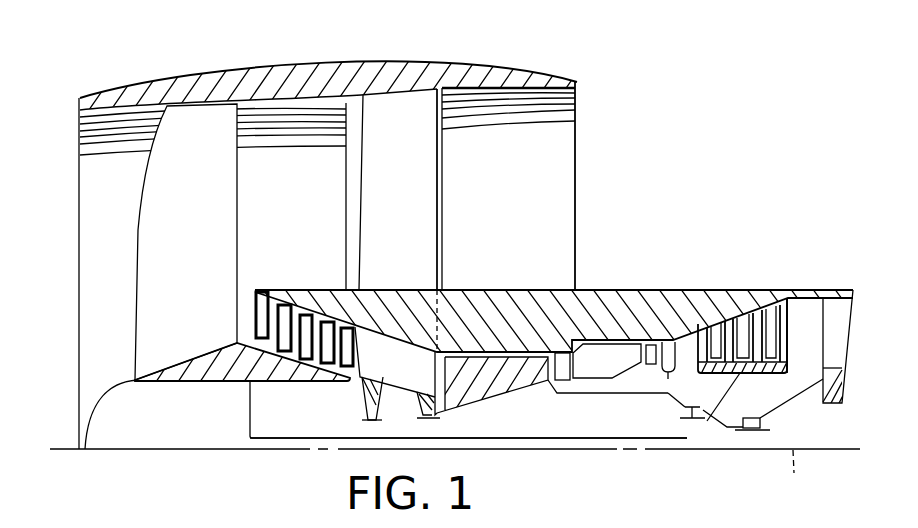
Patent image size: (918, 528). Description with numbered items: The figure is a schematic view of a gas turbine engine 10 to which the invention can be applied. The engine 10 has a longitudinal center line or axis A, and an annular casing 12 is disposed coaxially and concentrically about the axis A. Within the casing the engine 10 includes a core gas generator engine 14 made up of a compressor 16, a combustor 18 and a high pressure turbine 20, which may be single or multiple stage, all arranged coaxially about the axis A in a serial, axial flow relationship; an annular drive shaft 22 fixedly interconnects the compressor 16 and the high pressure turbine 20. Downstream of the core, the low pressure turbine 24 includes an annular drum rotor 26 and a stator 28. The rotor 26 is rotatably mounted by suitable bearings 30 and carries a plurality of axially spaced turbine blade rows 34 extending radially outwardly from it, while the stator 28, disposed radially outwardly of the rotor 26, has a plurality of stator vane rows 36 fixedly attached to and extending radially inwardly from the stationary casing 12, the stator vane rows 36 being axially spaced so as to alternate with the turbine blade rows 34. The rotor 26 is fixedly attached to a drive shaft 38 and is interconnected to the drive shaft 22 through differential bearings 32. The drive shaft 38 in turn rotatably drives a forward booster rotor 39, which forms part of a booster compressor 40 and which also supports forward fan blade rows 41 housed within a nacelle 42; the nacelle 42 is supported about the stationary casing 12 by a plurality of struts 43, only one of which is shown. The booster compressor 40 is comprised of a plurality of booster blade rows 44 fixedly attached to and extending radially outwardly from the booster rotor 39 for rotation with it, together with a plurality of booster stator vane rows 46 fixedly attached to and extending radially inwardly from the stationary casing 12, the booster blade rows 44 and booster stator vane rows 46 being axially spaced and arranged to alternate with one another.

The gas turbine engine 10 is at (673, 162).
The annular casing 12 is at (587, 290).
The core gas generator engine 14 is at (548, 383).
The compressor 16 is at (497, 395).
The combustor 18 is at (617, 394).
The high pressure turbine 20 is at (684, 292).
The annular drive shaft 22 is at (628, 395).
The low pressure turbine 24 is at (738, 311).
The annular drum rotor 26 is at (768, 374).
The stator 28 is at (784, 333).
The bearings 30 is at (748, 430).
The differential bearings 32 is at (703, 425).
The turbine blade rows 34 is at (797, 298).
The stator vane rows 36 is at (722, 327).
The drive shaft 38 is at (307, 440).
The forward booster rotor 39 is at (187, 383).
The booster compressor 40 is at (248, 304).
The forward fan blade rows 41 is at (205, 216).
The nacelle 42 is at (402, 62).
The struts 43 is at (413, 161).
The booster blade rows 44 is at (327, 353).
The booster stator vane rows 46 is at (302, 313).
The longitudinal center line or axis A is at (795, 478).